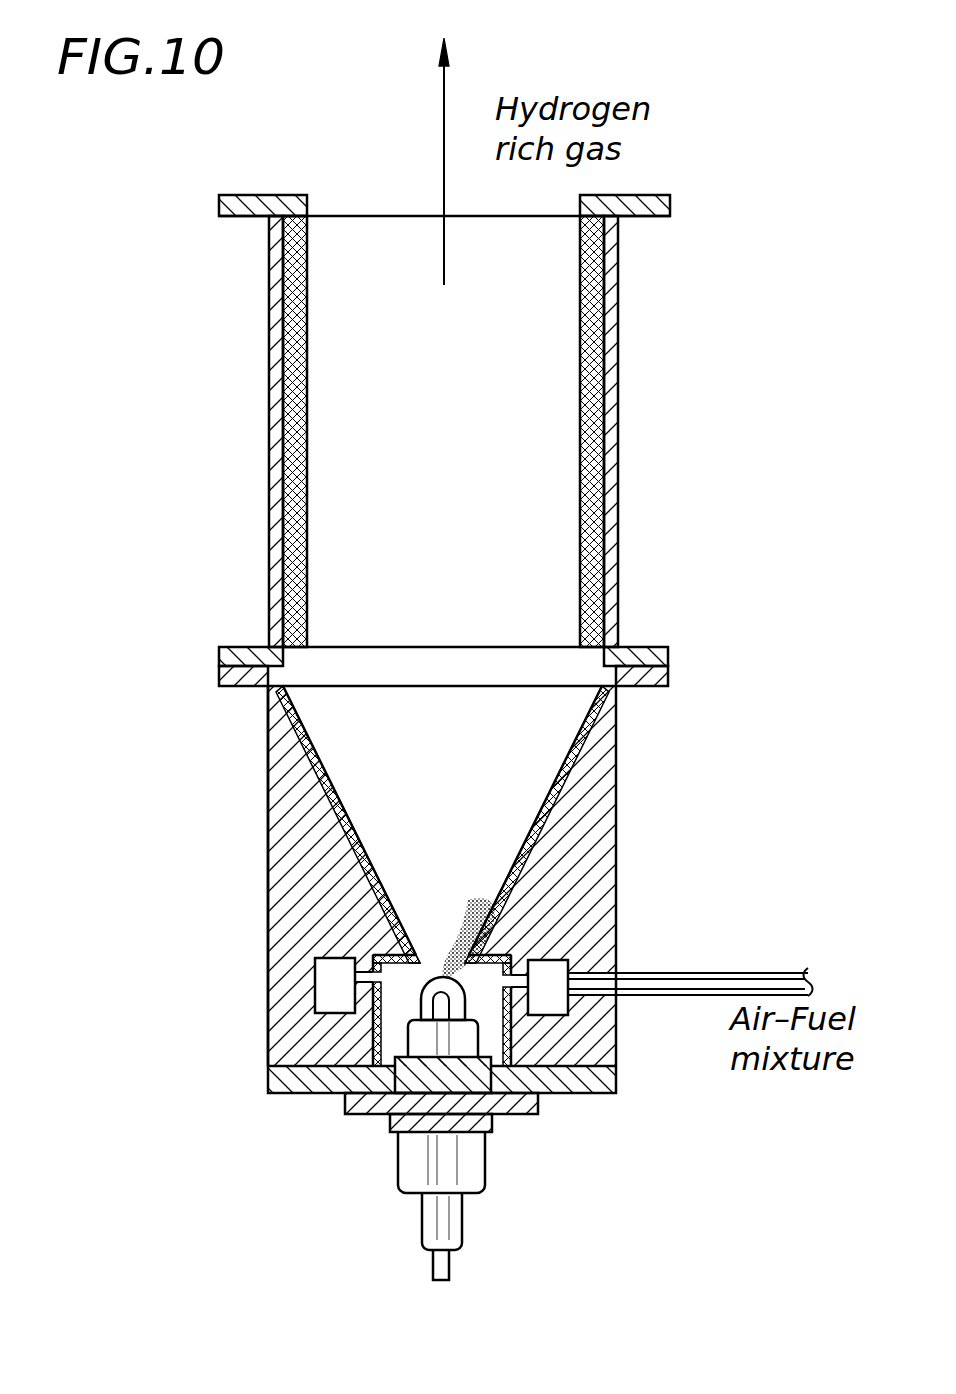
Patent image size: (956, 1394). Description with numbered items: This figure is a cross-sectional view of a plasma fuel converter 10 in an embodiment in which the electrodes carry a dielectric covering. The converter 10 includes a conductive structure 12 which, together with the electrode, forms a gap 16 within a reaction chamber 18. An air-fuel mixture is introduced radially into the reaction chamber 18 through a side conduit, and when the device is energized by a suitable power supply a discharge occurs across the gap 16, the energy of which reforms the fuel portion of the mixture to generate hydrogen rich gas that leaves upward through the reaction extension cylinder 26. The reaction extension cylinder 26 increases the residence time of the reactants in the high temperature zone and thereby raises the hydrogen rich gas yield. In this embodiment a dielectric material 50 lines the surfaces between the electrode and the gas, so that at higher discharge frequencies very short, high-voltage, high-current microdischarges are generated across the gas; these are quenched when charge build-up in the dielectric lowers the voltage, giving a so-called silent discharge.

The plasma fuel converter 10 is at (270, 762).
The conductive structure 12 is at (268, 868).
The gap 16 is at (444, 929).
The reaction chamber 18 is at (452, 811).
The reaction extension cylinder 26 is at (270, 402).
The dielectric material 50 is at (335, 752).